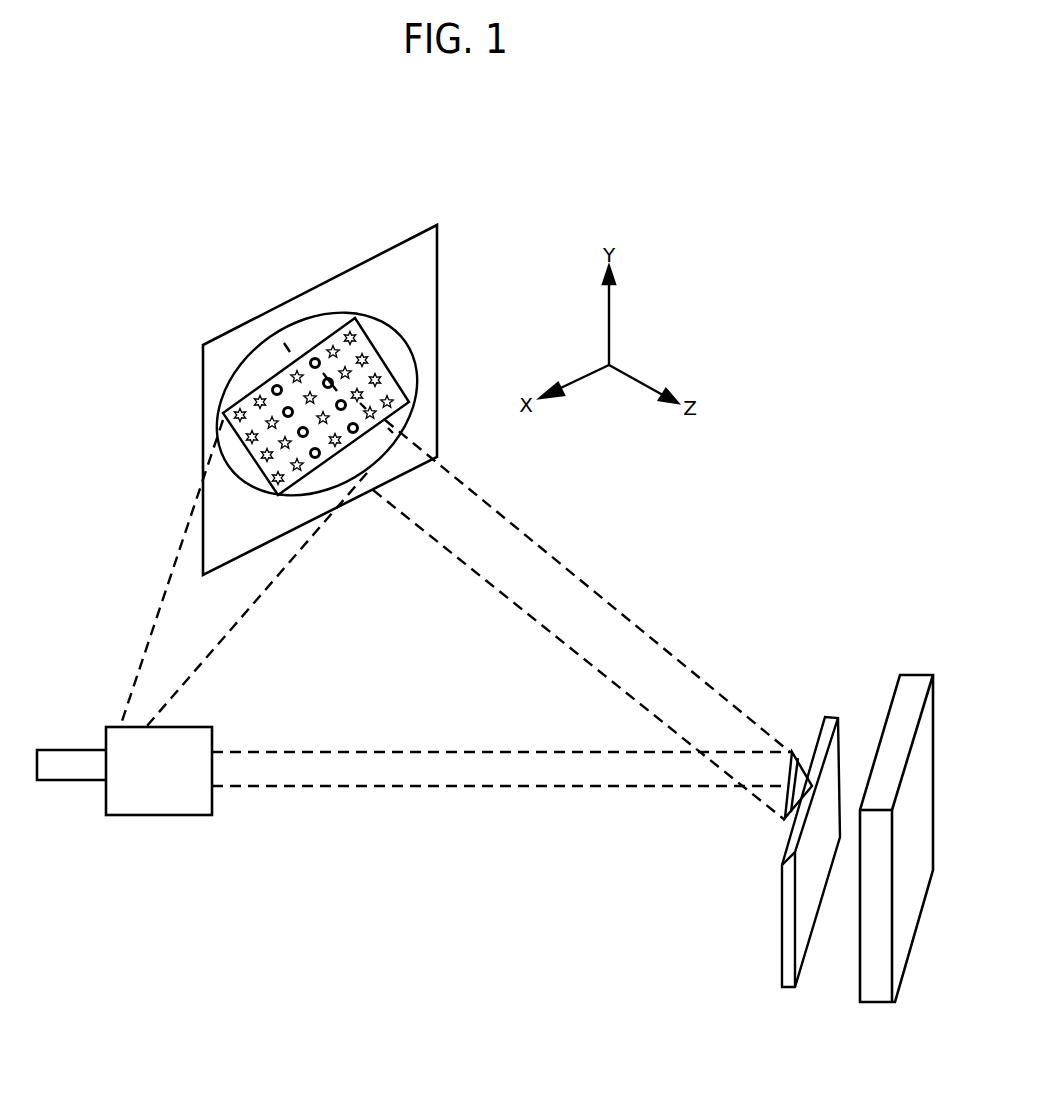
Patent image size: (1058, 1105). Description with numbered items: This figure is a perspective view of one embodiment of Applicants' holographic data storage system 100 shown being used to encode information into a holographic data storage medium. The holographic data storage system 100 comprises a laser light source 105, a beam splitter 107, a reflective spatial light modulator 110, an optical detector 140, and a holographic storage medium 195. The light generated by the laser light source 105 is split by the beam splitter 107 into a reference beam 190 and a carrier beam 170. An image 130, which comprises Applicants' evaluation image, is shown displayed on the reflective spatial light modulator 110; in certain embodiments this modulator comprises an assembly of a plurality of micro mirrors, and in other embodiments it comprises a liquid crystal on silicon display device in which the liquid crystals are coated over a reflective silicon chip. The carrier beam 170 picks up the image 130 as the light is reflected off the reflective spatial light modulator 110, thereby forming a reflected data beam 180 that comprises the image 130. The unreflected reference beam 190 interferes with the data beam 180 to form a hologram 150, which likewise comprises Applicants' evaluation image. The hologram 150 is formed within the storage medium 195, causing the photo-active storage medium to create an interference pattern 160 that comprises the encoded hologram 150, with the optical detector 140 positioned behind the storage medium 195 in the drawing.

The holographic data storage system 100 is at (406, 917).
The laser light source 105 is at (64, 772).
The beam splitter 107 is at (172, 797).
The reflective spatial light modulator 110 is at (357, 505).
The image 130 is at (380, 360).
The optical detector 140 is at (860, 980).
The hologram 150 is at (812, 783).
The interference pattern 160 is at (818, 784).
The carrier beam 170 is at (230, 602).
The reflected data beam 180 is at (492, 522).
The reference beam 190 is at (400, 783).
The holographic storage medium 195 is at (840, 732).